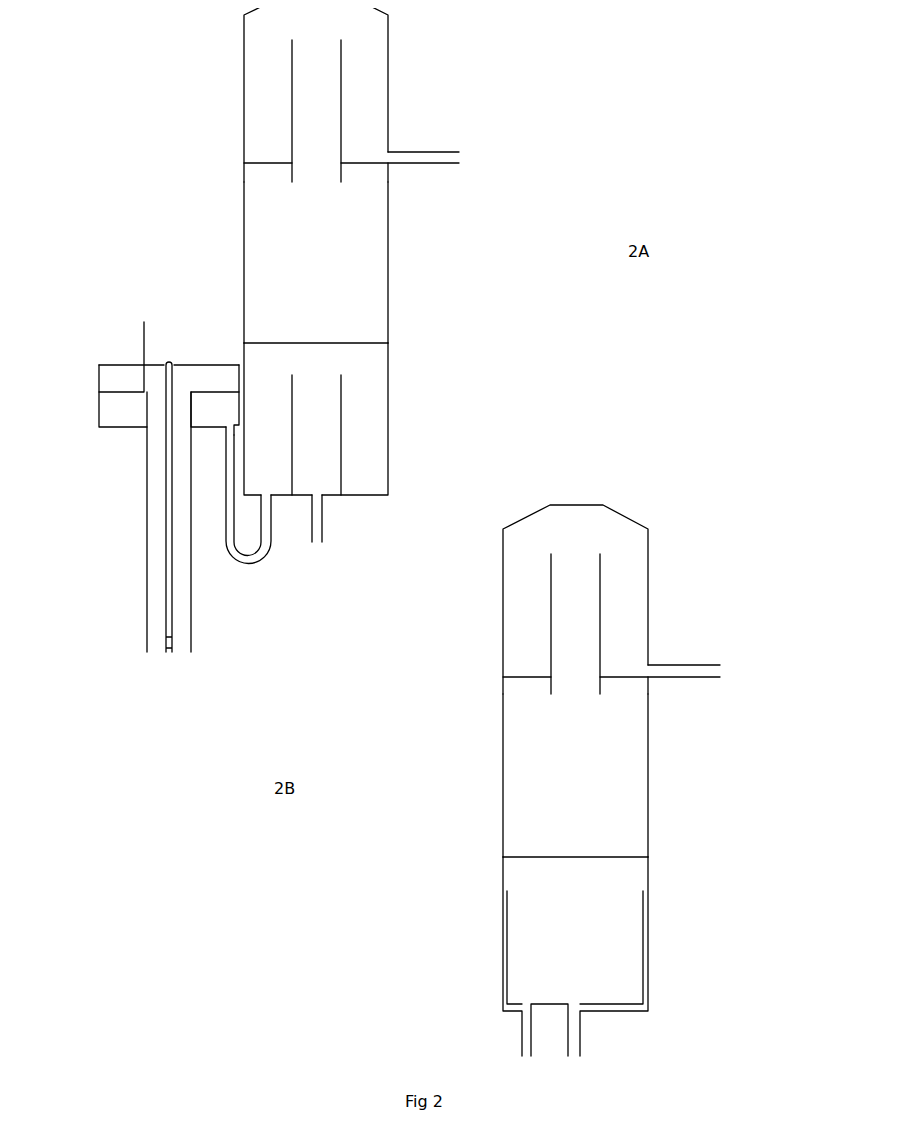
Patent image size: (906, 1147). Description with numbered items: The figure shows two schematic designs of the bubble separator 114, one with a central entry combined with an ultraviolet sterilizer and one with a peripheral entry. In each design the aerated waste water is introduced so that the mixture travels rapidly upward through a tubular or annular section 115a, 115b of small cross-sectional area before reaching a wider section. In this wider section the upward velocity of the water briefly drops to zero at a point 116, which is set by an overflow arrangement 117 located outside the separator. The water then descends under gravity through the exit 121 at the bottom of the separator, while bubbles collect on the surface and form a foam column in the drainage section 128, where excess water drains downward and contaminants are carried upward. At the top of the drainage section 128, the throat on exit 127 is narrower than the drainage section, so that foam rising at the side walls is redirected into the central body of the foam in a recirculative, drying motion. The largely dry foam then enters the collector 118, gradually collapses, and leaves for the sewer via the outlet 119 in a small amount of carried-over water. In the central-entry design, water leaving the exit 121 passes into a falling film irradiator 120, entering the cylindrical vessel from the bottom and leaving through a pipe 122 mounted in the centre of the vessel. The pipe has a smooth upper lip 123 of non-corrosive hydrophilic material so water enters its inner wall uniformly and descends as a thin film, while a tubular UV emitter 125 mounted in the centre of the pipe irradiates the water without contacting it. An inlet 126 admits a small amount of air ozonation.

In FIG. 2A, the bubble separator 114 is at (383, 292).
In FIG. 2B, the bubble separator 114 is at (642, 808).
In FIG. 2A, the tubular entry section 115a is at (334, 405).
In FIG. 2B, the annular entry section 115b is at (635, 918).
In FIG. 2A, the zero-velocity point 116 is at (333, 335).
In FIG. 2B, the zero-velocity point 116 is at (592, 849).
In FIG. 2A, the overflow arrangement 117 is at (229, 384).
In FIG. 2A, the collector 118 is at (372, 104).
In FIG. 2B, the collector 118 is at (625, 619).
In FIG. 2A, the outlet 119 is at (451, 147).
In FIG. 2B, the outlet 119 is at (712, 658).
In FIG. 2A, the falling film irradiator 120 is at (91, 395).
In FIG. 2A, the bottom exit 121 is at (218, 427).
In FIG. 2A, the central pipe 122 is at (139, 445).
In FIG. 2A, the smooth upper lip 123 is at (135, 317).
In FIG. 2A, the tubular UV emitter 125 is at (160, 644).
In FIG. 2A, the air ozonation inlet 126 is at (96, 354).
In FIG. 2A, the throat on exit 127 is at (282, 172).
In FIG. 2B, the throat on exit 127 is at (541, 686).
In FIG. 2A, the drainage section 128 is at (318, 247).
In FIG. 2B, the drainage section 128 is at (572, 763).